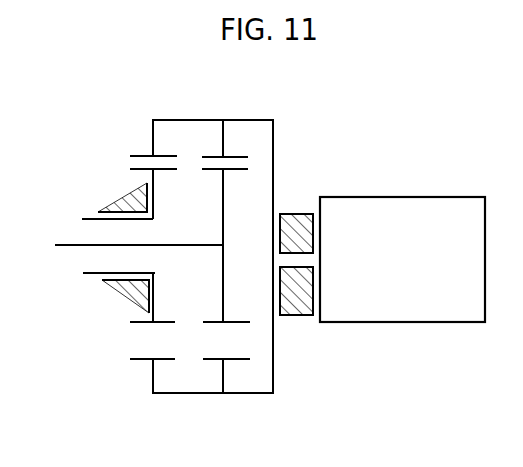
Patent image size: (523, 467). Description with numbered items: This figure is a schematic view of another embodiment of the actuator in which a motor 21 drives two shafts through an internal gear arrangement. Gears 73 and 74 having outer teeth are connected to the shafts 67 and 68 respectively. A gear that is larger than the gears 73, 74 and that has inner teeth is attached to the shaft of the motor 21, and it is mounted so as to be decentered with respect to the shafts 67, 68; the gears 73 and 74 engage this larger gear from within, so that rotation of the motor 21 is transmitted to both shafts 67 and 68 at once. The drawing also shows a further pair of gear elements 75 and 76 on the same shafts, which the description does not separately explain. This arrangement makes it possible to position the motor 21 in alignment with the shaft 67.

The motor 21 is at (405, 215).
The shaft 67 is at (70, 243).
The shaft 68 is at (92, 213).
The gear 73 is at (235, 172).
The gear 74 is at (167, 172).
The clutch plate 75 is at (142, 363).
The clutch plate 76 is at (238, 363).